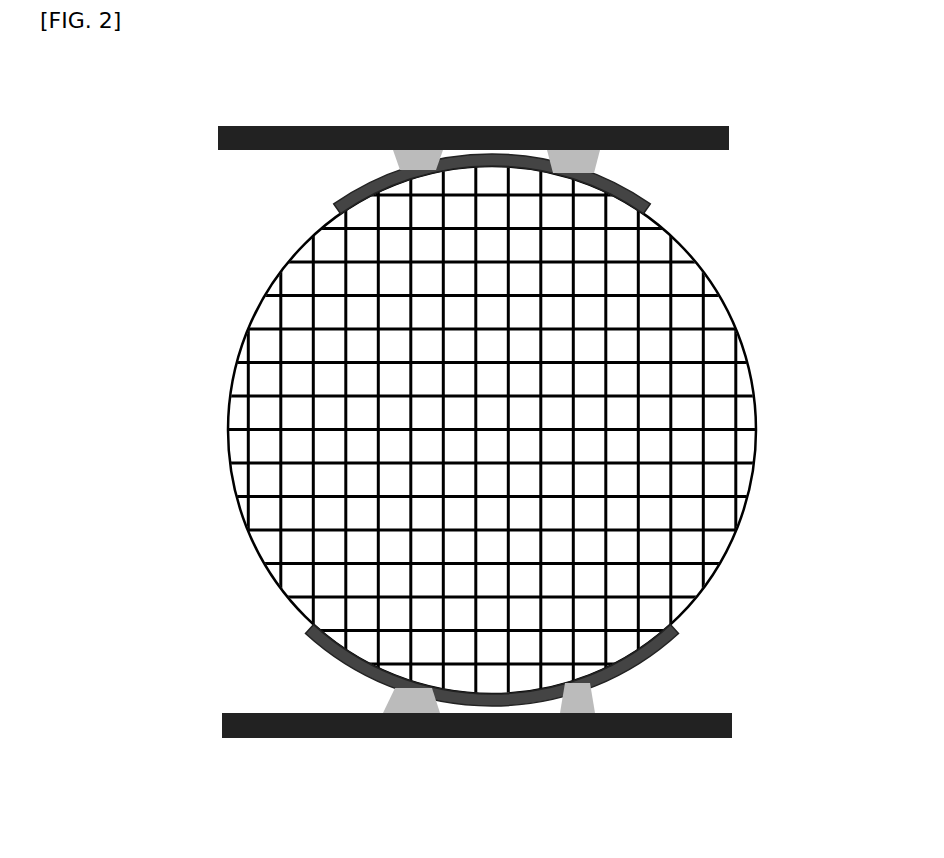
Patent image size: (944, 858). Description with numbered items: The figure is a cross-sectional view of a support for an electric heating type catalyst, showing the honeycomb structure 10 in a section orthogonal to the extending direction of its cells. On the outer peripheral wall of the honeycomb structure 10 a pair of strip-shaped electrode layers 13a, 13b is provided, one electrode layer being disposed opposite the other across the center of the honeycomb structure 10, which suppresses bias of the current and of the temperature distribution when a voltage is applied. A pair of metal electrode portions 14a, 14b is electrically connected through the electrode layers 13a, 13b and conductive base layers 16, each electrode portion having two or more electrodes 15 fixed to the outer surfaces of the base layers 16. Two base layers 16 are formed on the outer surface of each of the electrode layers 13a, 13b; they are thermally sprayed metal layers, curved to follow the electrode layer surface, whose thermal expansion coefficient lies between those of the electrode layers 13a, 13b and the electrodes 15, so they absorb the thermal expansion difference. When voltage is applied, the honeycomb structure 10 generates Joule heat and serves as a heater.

The honeycomb structure 10 is at (763, 390).
The electrode layer 13a is at (643, 210).
The electrode layer 13b is at (310, 628).
The electrode portion 14a is at (218, 127).
The electrode portion 14b is at (222, 720).
The electrode 15 is at (412, 127).
The base layer 16 is at (390, 161).